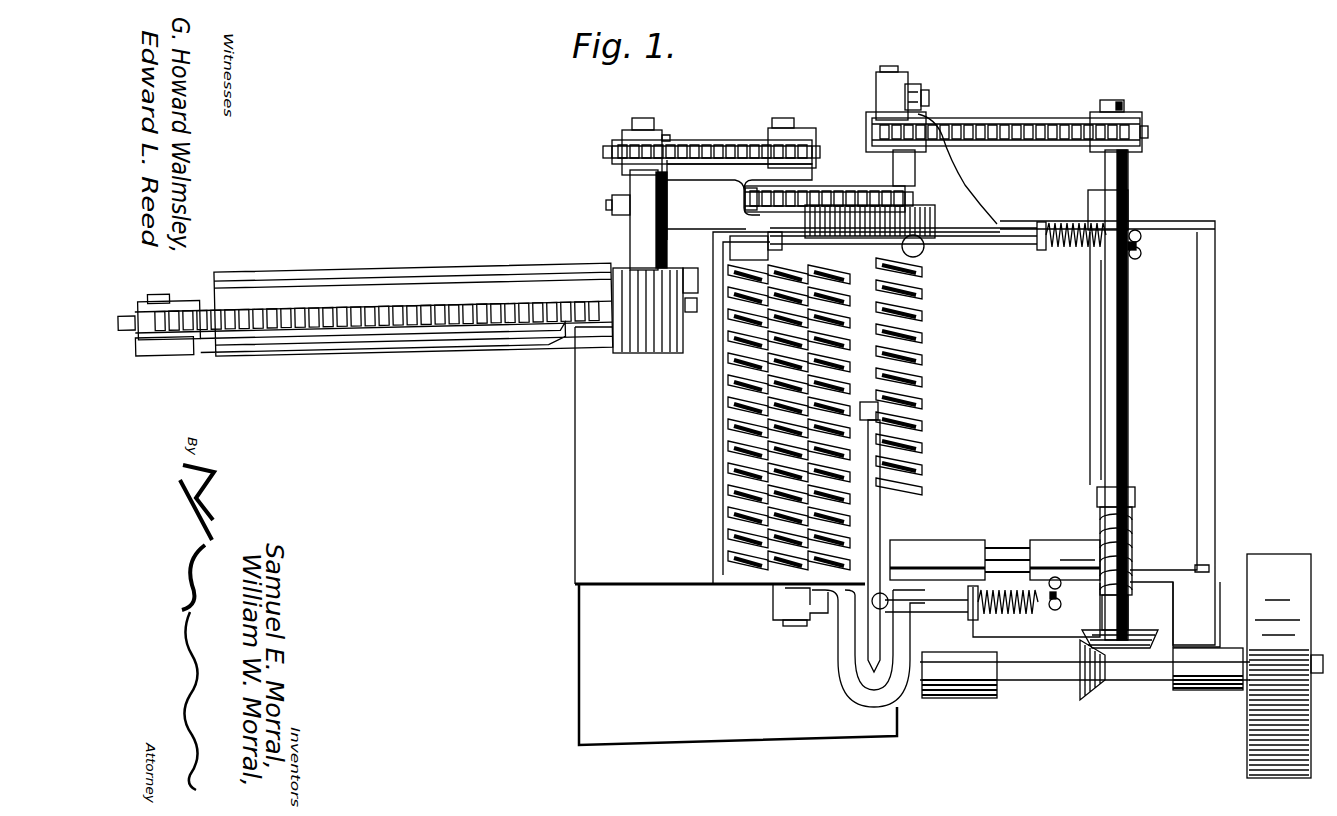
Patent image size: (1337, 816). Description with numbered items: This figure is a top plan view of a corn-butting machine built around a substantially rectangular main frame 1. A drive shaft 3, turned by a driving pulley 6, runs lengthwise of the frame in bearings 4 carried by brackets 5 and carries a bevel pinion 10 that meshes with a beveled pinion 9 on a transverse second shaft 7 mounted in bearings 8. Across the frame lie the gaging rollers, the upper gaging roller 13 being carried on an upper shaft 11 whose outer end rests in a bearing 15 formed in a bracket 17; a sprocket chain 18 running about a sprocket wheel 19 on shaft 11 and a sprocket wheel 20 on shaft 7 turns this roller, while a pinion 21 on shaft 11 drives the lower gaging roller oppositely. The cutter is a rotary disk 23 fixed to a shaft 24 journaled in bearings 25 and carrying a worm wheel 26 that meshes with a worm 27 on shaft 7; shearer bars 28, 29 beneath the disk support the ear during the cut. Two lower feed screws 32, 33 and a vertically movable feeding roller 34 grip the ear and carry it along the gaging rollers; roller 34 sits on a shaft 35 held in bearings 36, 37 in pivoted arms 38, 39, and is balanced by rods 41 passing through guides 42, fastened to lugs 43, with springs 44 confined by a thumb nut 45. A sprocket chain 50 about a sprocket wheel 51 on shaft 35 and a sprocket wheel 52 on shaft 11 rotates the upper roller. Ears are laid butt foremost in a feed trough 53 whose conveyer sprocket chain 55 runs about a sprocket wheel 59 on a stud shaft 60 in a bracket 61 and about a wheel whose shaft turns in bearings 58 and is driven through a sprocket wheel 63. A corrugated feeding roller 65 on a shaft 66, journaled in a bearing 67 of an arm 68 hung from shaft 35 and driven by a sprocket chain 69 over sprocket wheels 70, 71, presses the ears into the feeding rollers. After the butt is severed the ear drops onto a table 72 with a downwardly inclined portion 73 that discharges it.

The main frame 1 is at (1217, 392).
The drive shaft 3 is at (1150, 678).
The bearings 4 is at (962, 698).
The brackets 5 is at (978, 640).
The driving pulley 6 is at (1280, 560).
The second shaft 7 is at (1128, 412).
The bearings 8 is at (1130, 210).
The beveled pinion 9 is at (1143, 640).
The pinion 10 is at (1086, 698).
The upper gaging roller shaft 11 is at (890, 72).
The upper gaging roller 13 is at (926, 290).
The bearing 15 is at (915, 84).
The bracket 17 is at (972, 196).
The sprocket chain 18 is at (985, 118).
The sprocket wheel 19 is at (876, 118).
The sprocket wheel 20 is at (1098, 118).
The pinion 21 is at (936, 222).
The rotary disk 23 is at (880, 524).
The shaft 24 is at (998, 548).
The bearings 25 is at (944, 540).
The worm wheel 26 is at (1083, 553).
The worm 27 is at (1135, 504).
The shearer bar 28 is at (870, 412).
The shearer bar 29 is at (926, 436).
The feed screw 32 is at (728, 372).
The feed screw 33 is at (846, 358).
The vertically movable feeding roller 34 is at (775, 490).
The shaft 35 is at (778, 118).
The bearing 36 is at (775, 602).
The bearing 37 is at (770, 250).
The arm 38 is at (838, 666).
The arm 39 is at (828, 248).
The rods 41 is at (1010, 246).
The guides 42 is at (1042, 252).
The lugs 43 is at (902, 246).
The springs 44 is at (1072, 224).
The thumb nut 45 is at (1142, 243).
The sprocket chain 50 is at (800, 186).
The sprocket wheel 51 is at (790, 186).
The sprocket wheel 52 is at (915, 183).
The feed trough 53 is at (428, 278).
The sprocket chain 55 is at (305, 310).
The bearings 58 is at (697, 314).
The sprocket wheel 59 is at (168, 302).
The stud shaft 60 is at (156, 295).
The bracket 61 is at (187, 356).
The sprocket wheel 63 is at (606, 205).
The corrugated feeding roller 65 is at (618, 356).
The shaft 66 is at (645, 120).
The bearing 67 is at (630, 222).
The arm 68 is at (697, 210).
The sprocket chain 69 is at (714, 140).
The sprocket wheel 70 is at (667, 136).
The sprocket wheel 71 is at (798, 128).
The table 72 is at (575, 448).
The downwardly inclined portion 73 is at (579, 658).